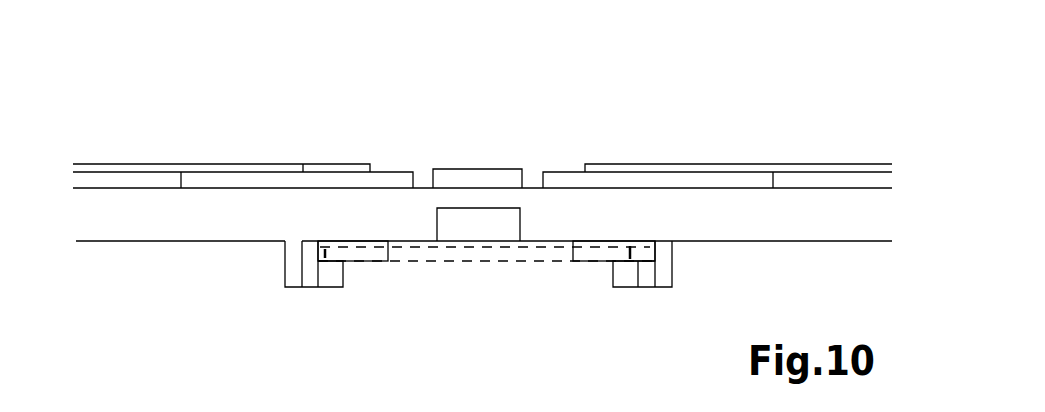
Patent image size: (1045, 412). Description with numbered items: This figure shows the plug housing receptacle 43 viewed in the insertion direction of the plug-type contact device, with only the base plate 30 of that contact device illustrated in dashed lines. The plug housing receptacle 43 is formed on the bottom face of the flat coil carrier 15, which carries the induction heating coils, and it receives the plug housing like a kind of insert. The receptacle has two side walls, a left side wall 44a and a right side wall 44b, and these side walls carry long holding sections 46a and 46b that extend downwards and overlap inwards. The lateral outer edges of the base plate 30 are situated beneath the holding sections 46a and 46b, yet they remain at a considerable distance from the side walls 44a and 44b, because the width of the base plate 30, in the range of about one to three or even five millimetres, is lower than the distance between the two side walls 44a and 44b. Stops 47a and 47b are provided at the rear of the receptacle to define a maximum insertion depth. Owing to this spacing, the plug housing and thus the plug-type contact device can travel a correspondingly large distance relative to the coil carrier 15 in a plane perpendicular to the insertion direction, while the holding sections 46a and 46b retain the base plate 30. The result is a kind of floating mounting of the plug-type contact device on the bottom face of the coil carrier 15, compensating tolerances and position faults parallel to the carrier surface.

The coil carrier 15 is at (217, 218).
The base plate 30 is at (470, 263).
The plug housing receptacle 43 is at (445, 290).
The side wall 44a is at (320, 250).
The side wall 44b is at (640, 250).
The holding section 46a is at (328, 275).
The holding section 46b is at (627, 277).
The stop 47a is at (353, 263).
The stop 47b is at (563, 250).